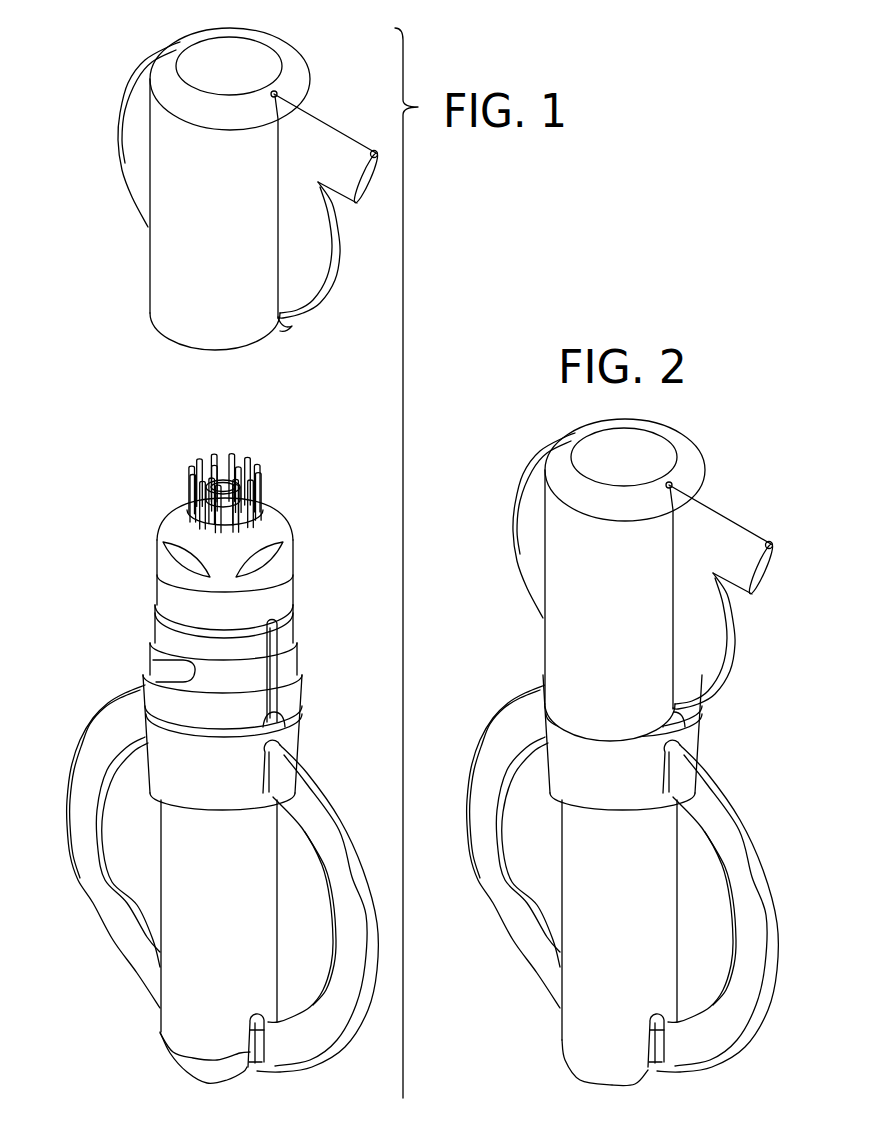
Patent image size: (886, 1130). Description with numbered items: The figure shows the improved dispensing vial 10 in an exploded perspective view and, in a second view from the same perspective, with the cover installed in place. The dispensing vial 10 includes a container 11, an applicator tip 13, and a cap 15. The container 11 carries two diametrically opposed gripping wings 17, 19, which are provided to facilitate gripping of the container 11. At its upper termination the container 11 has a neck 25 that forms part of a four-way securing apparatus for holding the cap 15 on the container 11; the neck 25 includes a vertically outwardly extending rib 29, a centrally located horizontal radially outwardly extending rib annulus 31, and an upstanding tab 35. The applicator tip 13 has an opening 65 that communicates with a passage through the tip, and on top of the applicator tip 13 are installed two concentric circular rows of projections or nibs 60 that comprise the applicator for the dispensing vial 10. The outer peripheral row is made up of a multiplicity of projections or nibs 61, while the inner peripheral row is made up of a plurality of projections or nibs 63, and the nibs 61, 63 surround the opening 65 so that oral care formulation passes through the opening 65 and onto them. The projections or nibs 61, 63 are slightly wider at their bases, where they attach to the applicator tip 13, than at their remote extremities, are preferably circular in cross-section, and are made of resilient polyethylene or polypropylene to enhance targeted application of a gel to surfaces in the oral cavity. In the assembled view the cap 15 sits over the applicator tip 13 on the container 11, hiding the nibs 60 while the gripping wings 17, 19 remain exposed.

In FIG. 1, the dispensing vial 10 is at (88, 270).
In FIG. 2, the dispensing vial 10 is at (513, 628).
In FIG. 1, the container 11 is at (337, 800).
In FIG. 2, the container 11 is at (768, 862).
In FIG. 1, the applicator tip 13 is at (300, 530).
In FIG. 1, the cap 15 is at (357, 120).
In FIG. 2, the cap 15 is at (712, 488).
In FIG. 1, the gripping wing 17 is at (102, 727).
In FIG. 1, the gripping wing 19 is at (330, 857).
In FIG. 1, the neck 25 is at (138, 632).
In FIG. 1, the rib 29 is at (276, 687).
In FIG. 1, the rib annulus 31 is at (155, 660).
In FIG. 1, the upstanding tab 35 is at (283, 723).
In FIG. 2, the upstanding tab 35 is at (693, 727).
In FIG. 1, the projections or nibs 60 is at (290, 458).
In FIG. 1, the projections or nibs 61 is at (260, 490).
In FIG. 1, the projections or nibs 63 is at (202, 462).
In FIG. 1, the opening 65 is at (224, 486).